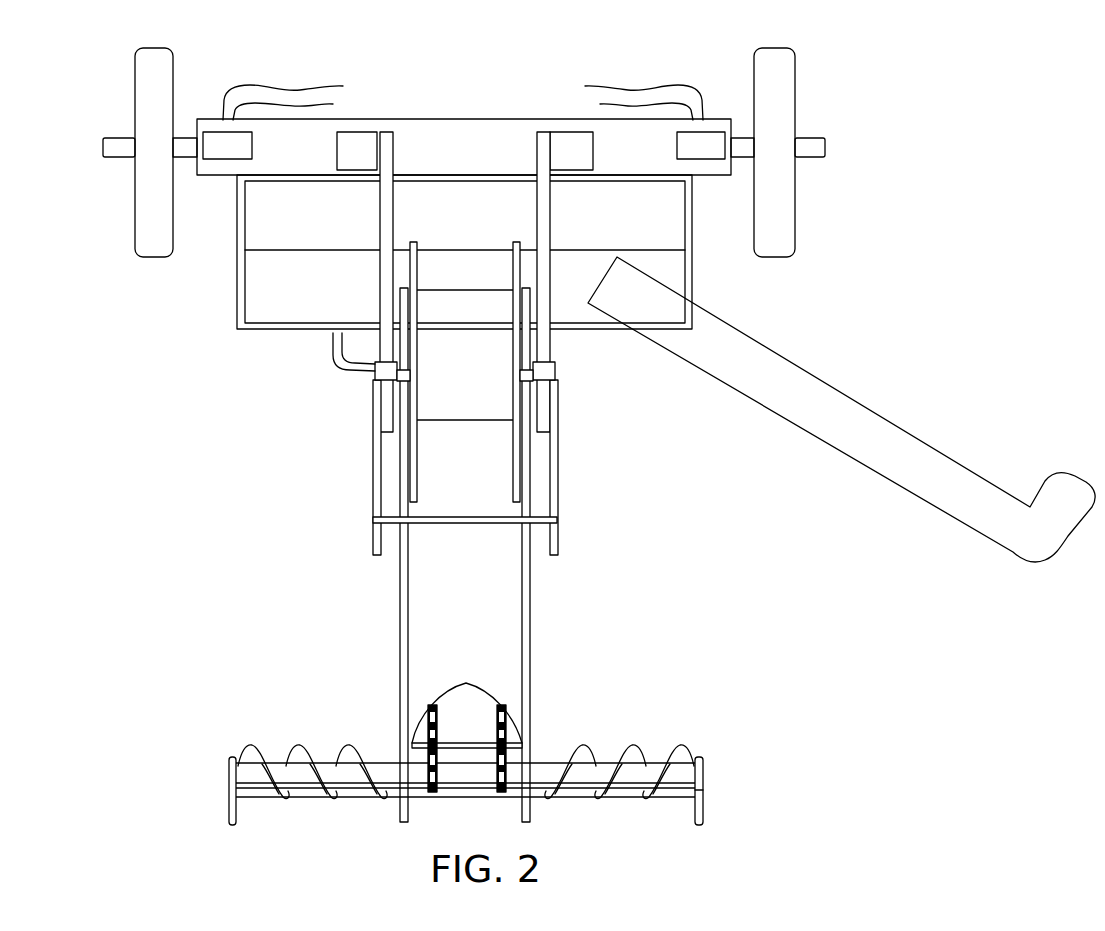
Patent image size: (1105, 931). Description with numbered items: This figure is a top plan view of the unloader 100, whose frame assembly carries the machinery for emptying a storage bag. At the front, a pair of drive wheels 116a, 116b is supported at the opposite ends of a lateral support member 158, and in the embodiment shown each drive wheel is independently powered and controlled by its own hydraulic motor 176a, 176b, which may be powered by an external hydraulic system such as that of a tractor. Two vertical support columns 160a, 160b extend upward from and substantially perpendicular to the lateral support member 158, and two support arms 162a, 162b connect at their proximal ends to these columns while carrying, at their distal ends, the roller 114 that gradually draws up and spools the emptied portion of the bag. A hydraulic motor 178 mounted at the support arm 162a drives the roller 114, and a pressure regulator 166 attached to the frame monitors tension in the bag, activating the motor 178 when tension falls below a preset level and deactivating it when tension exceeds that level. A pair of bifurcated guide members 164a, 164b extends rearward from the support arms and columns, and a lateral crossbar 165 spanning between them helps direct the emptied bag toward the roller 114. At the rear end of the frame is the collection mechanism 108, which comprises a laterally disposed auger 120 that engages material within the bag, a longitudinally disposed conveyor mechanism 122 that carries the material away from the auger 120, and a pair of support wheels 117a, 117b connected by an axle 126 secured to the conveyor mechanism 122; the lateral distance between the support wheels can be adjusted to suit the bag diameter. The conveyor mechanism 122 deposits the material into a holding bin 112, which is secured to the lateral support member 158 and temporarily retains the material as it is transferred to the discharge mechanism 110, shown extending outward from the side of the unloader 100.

The unloader 100 is at (880, 318).
The collection mechanism 108 is at (593, 828).
The discharge mechanism 110 is at (815, 420).
The holding bin 112 is at (258, 330).
The roller 114 is at (470, 403).
The drive wheel 116a is at (138, 70).
The drive wheel 116b is at (778, 257).
The support wheel 117a is at (229, 784).
The support wheel 117b is at (703, 791).
The auger 120 is at (300, 778).
The conveyor mechanism 122 is at (520, 633).
The axle 126 is at (703, 792).
The lateral support member 158 is at (445, 130).
The vertical support column 160a is at (357, 135).
The vertical support column 160b is at (565, 140).
The support arm 162a is at (392, 220).
The support arm 162b is at (543, 203).
The bifurcated guide member 164a is at (373, 470).
The bifurcated guide member 164b is at (558, 440).
The lateral crossbar 165 is at (452, 533).
The pressure regulator 166 is at (558, 372).
The hydraulic motor 176a is at (228, 150).
The hydraulic motor 176b is at (712, 150).
The hydraulic motor 178 is at (380, 365).